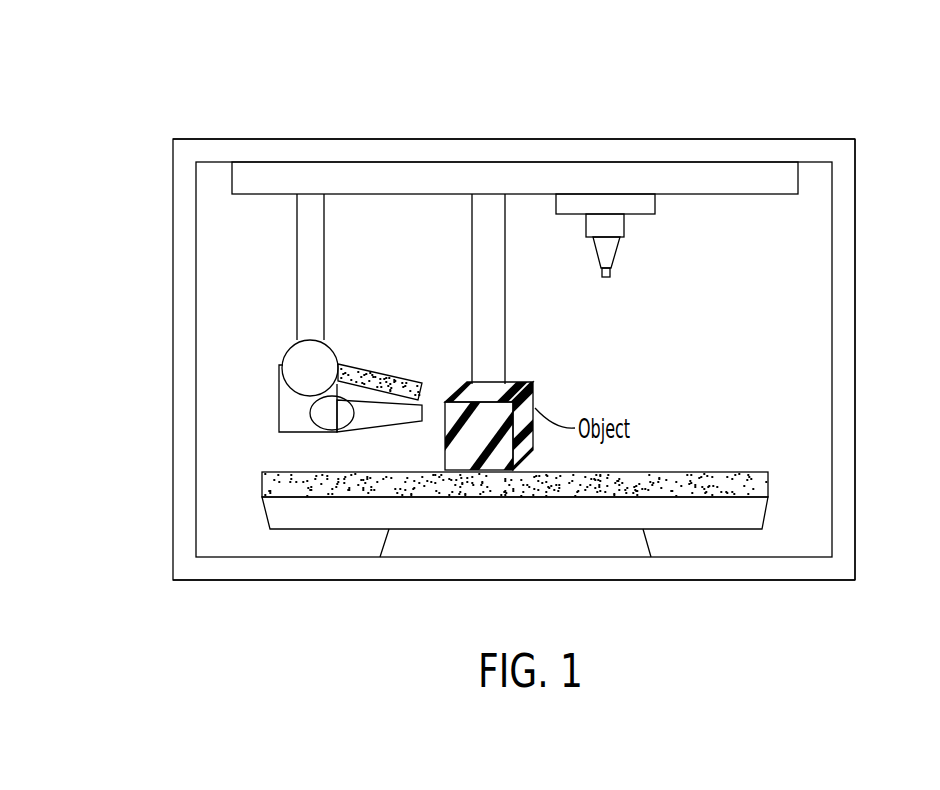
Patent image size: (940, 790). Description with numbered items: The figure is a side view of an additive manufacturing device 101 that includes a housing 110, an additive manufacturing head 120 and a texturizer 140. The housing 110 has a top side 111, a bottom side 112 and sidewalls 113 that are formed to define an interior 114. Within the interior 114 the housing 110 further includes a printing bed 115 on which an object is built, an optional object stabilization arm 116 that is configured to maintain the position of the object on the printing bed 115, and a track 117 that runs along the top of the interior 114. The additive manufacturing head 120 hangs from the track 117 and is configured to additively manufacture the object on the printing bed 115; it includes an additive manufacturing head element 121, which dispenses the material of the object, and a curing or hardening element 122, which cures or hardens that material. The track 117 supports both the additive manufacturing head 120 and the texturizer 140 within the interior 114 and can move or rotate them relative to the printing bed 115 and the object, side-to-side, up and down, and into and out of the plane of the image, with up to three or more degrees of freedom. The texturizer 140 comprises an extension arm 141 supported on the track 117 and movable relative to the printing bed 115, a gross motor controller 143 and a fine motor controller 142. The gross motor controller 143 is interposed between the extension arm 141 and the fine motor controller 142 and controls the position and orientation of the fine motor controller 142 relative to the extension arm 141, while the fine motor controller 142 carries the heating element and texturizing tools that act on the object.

The additive manufacturing device 101 is at (142, 136).
The housing 110 is at (843, 148).
The top side 111 is at (428, 138).
The bottom side 112 is at (248, 563).
The sidewalls 113 is at (855, 212).
The interior 114 is at (407, 257).
The printing bed 115 is at (347, 488).
The object stabilization arm 116 is at (505, 293).
The track 117 is at (353, 182).
The additive manufacturing head 120 is at (605, 252).
The additive manufacturing head element 121 is at (611, 276).
The curing or hardening element 122 is at (609, 262).
The texturizer 140 is at (321, 401).
The extension arm 141 is at (297, 277).
The fine motor controller 142 is at (282, 405).
The gross motor controller 143 is at (280, 363).